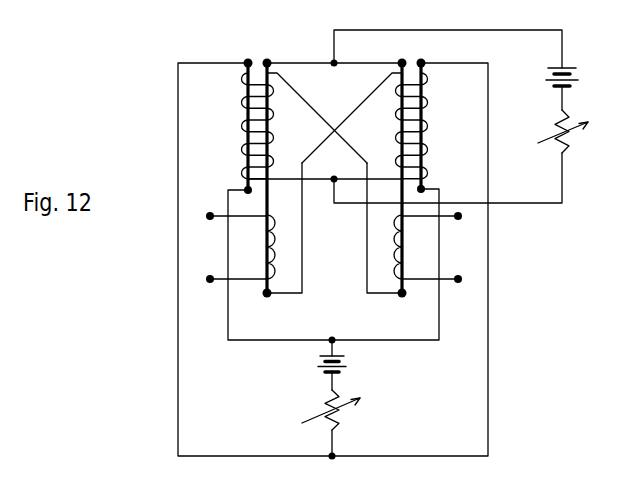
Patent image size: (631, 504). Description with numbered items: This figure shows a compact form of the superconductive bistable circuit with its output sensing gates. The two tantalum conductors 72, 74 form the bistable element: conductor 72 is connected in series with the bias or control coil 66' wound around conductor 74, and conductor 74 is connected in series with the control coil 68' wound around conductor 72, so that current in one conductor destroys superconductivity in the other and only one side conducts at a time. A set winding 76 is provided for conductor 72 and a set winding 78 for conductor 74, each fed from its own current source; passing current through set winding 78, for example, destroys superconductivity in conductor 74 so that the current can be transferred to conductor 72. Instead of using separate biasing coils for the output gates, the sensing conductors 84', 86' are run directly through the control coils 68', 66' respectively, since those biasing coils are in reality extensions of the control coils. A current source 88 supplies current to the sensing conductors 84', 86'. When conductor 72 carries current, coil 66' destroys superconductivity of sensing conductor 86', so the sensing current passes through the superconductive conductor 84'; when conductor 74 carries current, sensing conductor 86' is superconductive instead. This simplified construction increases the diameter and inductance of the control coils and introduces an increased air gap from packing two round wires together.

The control coil 66' is at (237, 126).
The sensing conductor 86' is at (224, 126).
The conductor 74 is at (269, 127).
The conductor 72 is at (400, 127).
The control coil 68' is at (435, 126).
The sensing conductor 84' is at (447, 126).
The set winding 78 is at (221, 278).
The set winding 76 is at (447, 279).
The current source 88 is at (318, 396).